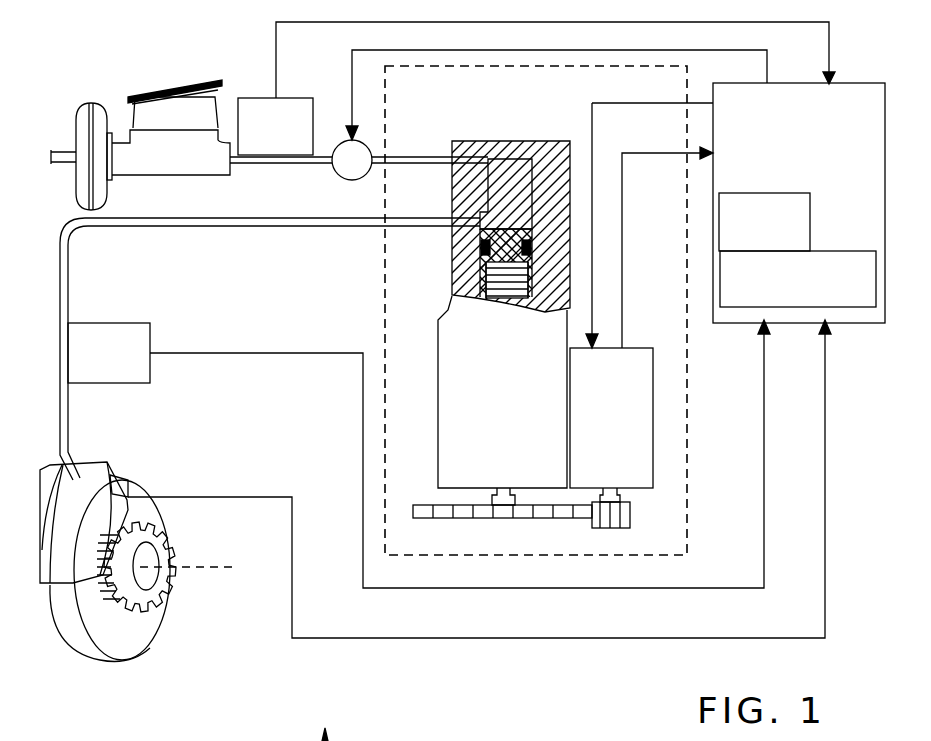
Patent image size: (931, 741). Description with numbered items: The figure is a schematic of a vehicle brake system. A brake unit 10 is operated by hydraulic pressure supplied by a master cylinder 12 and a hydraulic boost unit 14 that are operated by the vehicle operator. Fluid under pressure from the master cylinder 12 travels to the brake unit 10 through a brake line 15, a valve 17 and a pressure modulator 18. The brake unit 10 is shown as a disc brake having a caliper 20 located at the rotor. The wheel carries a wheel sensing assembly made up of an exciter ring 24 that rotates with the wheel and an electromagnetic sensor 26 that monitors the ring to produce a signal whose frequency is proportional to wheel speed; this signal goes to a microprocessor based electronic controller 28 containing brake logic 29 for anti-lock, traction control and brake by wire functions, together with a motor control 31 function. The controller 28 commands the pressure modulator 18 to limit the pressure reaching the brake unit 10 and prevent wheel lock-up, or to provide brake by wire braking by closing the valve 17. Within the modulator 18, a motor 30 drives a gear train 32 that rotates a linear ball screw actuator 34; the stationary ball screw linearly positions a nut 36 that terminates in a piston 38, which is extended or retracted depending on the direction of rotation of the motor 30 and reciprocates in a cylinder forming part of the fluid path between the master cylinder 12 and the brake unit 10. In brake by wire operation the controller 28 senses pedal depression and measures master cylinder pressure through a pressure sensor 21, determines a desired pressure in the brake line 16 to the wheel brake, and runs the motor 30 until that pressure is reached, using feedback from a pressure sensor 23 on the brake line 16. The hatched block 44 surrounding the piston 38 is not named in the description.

The brake unit 10 is at (160, 478).
The master cylinder 12 is at (177, 143).
The hydraulic boost unit 14 is at (82, 125).
The brake line 15 is at (315, 170).
The brake line 16 is at (203, 228).
The valve 17 is at (340, 150).
The pressure modulator 18 is at (385, 322).
The caliper 20 is at (98, 490).
The pressure sensor 21 is at (252, 107).
The pressure sensor 23 is at (118, 325).
The exciter ring 24 is at (152, 545).
The electromagnetic sensor 26 is at (125, 480).
The electronic controller 28 is at (852, 90).
The brake logic 29 is at (719, 207).
The motor 30 is at (625, 375).
The motor control 31 is at (745, 308).
The gear train 32 is at (430, 512).
The linear ball screw actuator 34 is at (455, 420).
The nut 36 is at (515, 292).
The piston 38 is at (480, 245).
The hydraulic block 44 is at (512, 185).